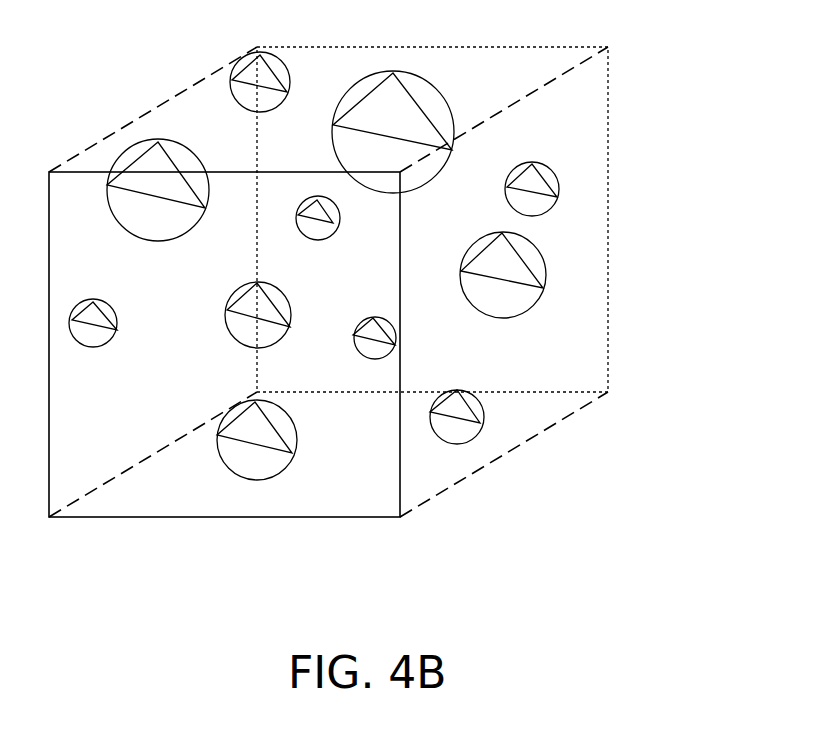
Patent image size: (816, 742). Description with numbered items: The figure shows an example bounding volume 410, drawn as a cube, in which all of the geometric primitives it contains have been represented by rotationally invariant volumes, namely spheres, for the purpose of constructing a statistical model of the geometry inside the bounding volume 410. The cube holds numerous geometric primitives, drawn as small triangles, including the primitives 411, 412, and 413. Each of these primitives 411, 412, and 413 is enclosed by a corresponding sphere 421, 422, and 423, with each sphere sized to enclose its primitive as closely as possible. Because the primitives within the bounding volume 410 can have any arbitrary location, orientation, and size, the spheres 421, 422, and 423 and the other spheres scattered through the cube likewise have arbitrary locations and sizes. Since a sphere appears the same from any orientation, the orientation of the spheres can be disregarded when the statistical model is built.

The bounding volume 410 is at (608, 67).
The primitive 411 is at (158, 173).
The primitive 412 is at (392, 111).
The primitive 413 is at (503, 260).
The sphere 421 is at (140, 217).
The sphere 422 is at (393, 132).
The sphere 423 is at (513, 303).